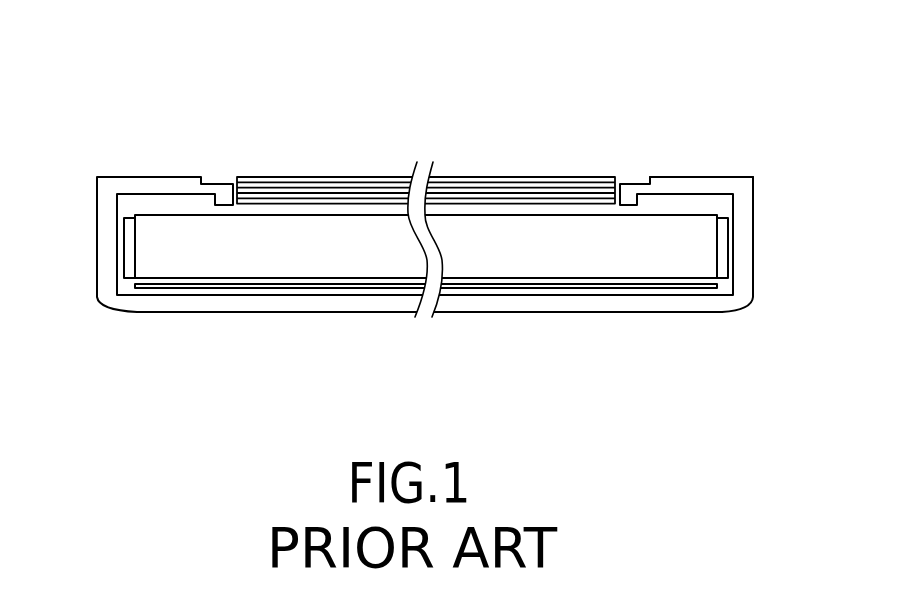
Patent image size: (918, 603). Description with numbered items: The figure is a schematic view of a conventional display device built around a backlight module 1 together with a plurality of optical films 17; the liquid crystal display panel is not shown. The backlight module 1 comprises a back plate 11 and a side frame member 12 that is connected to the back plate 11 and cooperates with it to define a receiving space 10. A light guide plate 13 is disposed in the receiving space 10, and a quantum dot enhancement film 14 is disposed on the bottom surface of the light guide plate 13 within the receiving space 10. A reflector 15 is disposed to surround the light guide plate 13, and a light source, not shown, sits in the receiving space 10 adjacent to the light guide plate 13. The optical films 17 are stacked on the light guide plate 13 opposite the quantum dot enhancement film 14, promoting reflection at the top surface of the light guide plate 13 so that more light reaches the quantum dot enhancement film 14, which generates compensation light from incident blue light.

The backlight module 1 is at (158, 108).
The receiving space 10 is at (722, 206).
The back plate 11 is at (483, 298).
The side frame member 12 is at (693, 177).
The light guide plate 13 is at (578, 263).
The quantum dot enhancement film 14 is at (330, 290).
The reflector 15 is at (123, 248).
The optical films 17 is at (461, 152).